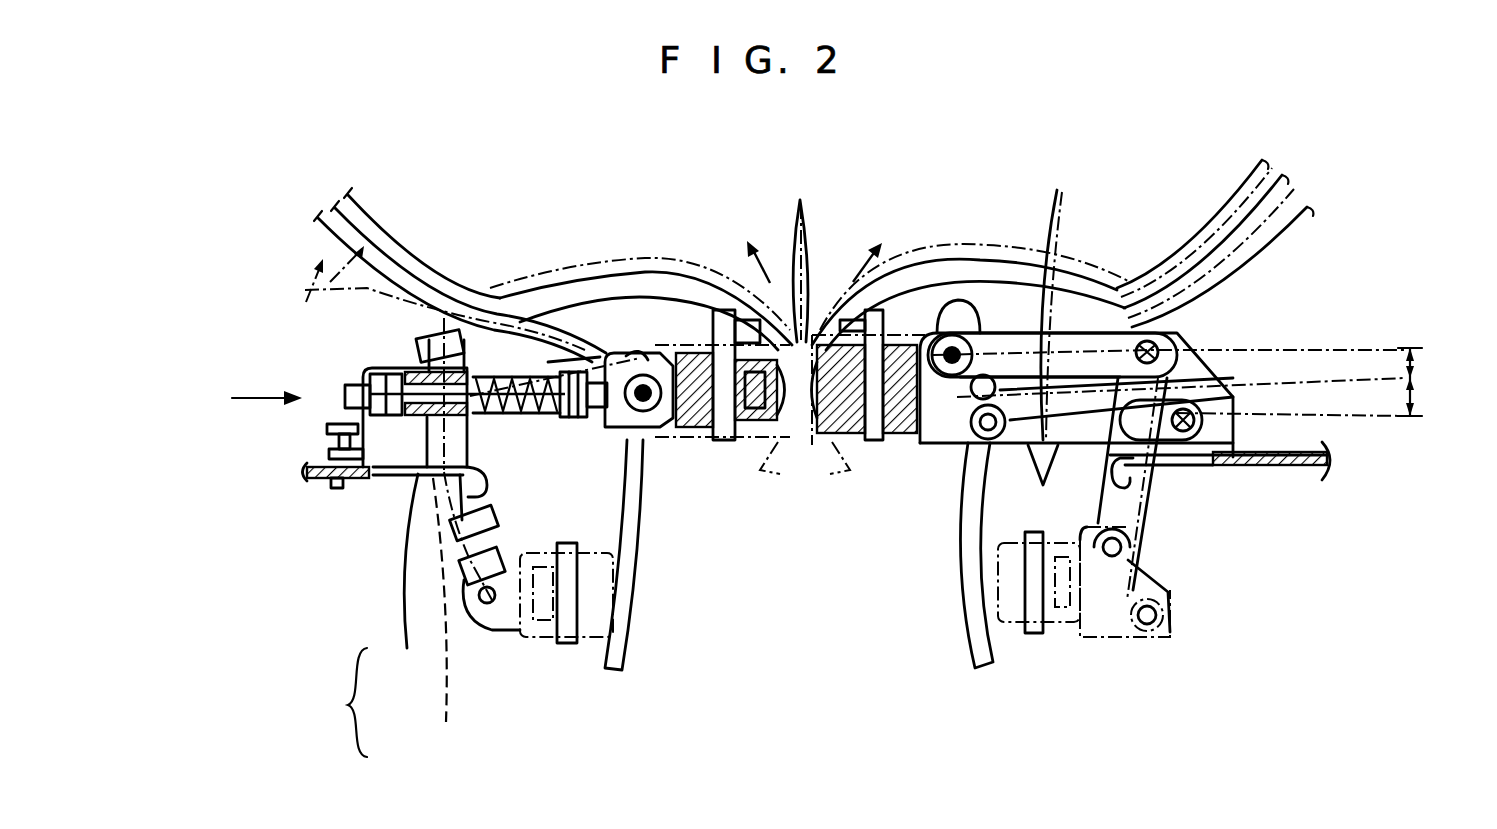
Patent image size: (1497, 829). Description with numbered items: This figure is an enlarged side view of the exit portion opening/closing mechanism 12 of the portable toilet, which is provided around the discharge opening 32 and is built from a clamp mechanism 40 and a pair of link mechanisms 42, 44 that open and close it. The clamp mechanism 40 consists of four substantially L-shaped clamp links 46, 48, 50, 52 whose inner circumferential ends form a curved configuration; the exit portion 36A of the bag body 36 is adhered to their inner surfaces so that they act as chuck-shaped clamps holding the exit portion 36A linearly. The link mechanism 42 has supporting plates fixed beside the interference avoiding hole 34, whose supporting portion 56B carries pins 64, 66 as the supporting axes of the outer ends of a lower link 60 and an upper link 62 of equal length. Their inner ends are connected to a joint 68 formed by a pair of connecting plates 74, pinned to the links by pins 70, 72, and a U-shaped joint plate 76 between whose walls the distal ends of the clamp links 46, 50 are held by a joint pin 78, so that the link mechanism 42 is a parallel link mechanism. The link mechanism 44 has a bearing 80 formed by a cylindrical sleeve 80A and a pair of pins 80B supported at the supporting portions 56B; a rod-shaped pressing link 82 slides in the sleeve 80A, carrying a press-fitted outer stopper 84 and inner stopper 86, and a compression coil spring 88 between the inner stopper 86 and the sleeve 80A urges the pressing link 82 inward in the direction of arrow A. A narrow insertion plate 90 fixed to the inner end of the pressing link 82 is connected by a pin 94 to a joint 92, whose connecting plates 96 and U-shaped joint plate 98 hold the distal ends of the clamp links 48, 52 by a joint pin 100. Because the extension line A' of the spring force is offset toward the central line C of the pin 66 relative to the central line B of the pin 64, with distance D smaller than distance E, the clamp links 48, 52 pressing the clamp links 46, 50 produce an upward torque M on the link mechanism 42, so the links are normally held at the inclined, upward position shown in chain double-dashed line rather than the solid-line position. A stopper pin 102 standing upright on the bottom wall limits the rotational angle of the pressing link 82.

The exit portion opening/closing mechanism 12 is at (862, 202).
The discharge opening 32 is at (1160, 540).
The interference avoiding hole 34 is at (398, 474).
The bag body 36 is at (446, 275).
The exit portion 36A is at (655, 688).
The clamp mechanism 40 is at (836, 298).
The link mechanism 42 is at (1015, 375).
The link mechanism 44 is at (519, 348).
The clamp link 46 is at (890, 440).
The clamp link 48 is at (787, 440).
The clamp link 50 is at (846, 440).
The clamp link 52 is at (743, 437).
The supporting portion 56B is at (373, 465).
The lower link 60 is at (1043, 486).
The upper link 62 is at (1060, 673).
The pin 64 is at (1185, 409).
The pin 66 is at (1148, 342).
The joint 68 is at (918, 330).
The pin 70 is at (940, 445).
The pin 72 is at (953, 350).
The connecting plate 74 is at (925, 445).
The joint plate 76 is at (908, 442).
The joint pin 78 is at (868, 442).
The bearing 80 is at (332, 702).
The sleeve 80A is at (406, 580).
The pin 80B is at (408, 615).
The pressing link 82 is at (540, 372).
The outer stopper 84 is at (392, 378).
The inner stopper 86 is at (587, 418).
The compression coil spring 88 is at (489, 416).
The insertion plate 90 is at (633, 440).
The joint 92 is at (683, 372).
The pin 94 is at (636, 380).
The connecting plate 96 is at (672, 437).
The joint plate 98 is at (703, 440).
The joint pin 100 is at (720, 440).
The stopper pin 102 is at (330, 428).
The arrow A is at (256, 366).
The extension line A' is at (1291, 328).
The central line B is at (1370, 418).
The central line C is at (1350, 350).
The distance D is at (1415, 350).
The distance E is at (1415, 380).
The torque M is at (768, 290).